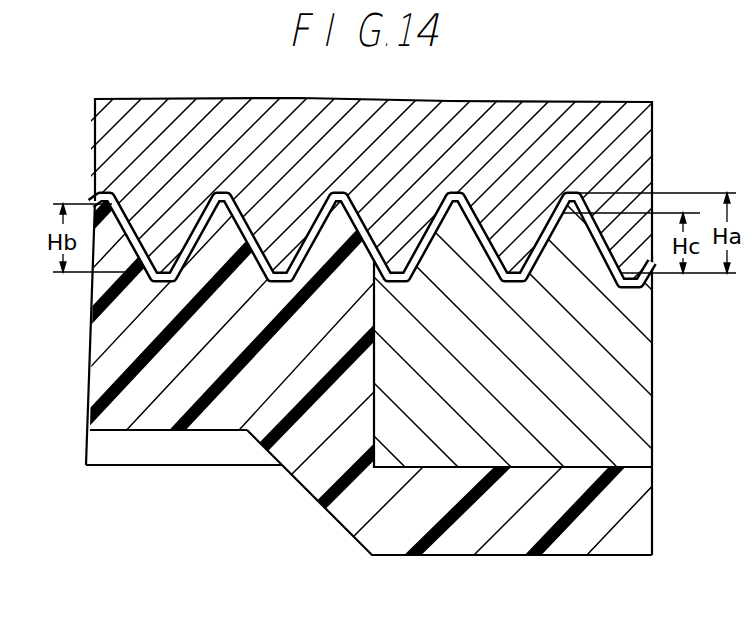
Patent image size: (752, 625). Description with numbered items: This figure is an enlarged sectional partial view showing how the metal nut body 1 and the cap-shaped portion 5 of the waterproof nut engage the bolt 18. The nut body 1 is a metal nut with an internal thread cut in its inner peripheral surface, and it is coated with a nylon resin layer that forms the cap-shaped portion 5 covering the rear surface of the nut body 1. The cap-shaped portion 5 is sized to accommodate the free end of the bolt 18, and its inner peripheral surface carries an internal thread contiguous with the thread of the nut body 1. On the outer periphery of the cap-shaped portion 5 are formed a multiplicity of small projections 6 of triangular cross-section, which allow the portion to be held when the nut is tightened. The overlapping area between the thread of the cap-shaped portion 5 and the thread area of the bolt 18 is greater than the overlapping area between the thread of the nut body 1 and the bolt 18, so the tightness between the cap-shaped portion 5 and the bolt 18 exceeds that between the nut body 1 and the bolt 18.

The nut body 1 is at (656, 437).
The cap-shaped portion 5 is at (120, 343).
The small projections 6 is at (187, 447).
The bolt 18 is at (212, 113).